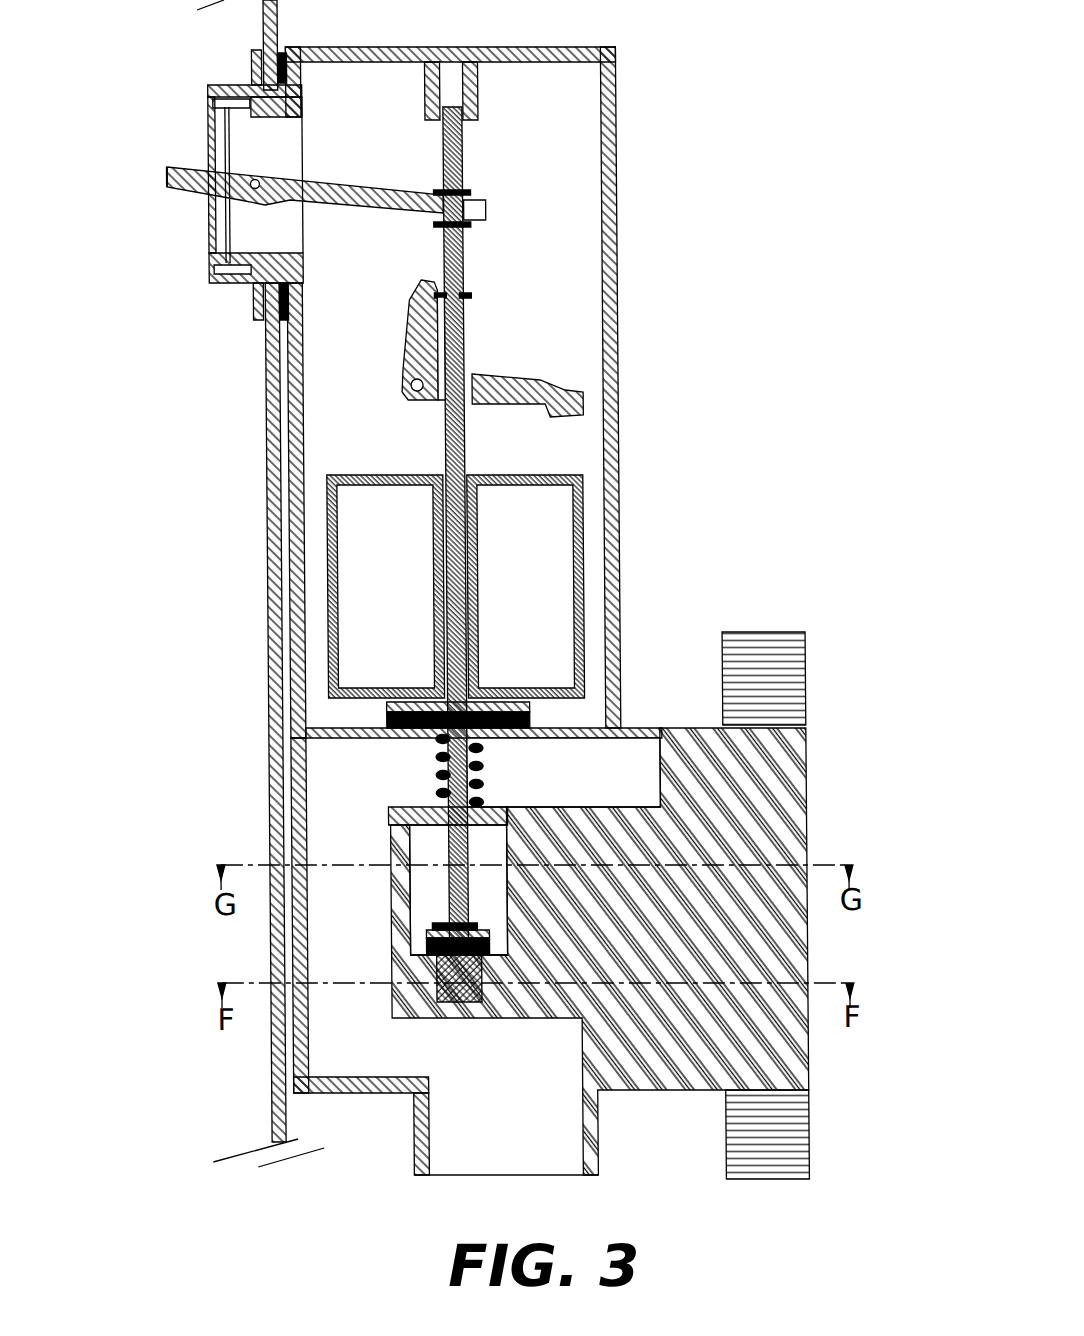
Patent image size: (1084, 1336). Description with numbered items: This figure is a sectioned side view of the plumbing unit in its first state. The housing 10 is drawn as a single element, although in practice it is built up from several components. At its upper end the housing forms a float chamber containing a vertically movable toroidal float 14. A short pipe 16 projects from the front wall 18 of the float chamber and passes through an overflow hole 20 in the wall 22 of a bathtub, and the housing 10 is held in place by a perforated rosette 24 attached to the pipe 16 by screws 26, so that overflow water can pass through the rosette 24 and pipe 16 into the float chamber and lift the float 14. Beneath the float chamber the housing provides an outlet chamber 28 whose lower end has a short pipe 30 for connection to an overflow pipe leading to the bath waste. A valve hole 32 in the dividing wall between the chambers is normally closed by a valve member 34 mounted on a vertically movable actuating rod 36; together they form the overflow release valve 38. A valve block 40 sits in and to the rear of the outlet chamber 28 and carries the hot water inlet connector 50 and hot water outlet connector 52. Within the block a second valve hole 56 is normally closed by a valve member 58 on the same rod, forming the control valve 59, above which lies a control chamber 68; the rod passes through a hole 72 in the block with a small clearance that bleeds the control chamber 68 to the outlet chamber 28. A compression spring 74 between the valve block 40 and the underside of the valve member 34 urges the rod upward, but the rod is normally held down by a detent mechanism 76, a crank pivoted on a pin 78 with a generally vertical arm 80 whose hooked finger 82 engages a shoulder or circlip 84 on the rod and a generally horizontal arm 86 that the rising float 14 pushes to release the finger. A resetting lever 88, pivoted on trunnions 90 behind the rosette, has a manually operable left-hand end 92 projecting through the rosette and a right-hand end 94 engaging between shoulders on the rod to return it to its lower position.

The housing 10 is at (800, 392).
The toroidal float 14 is at (589, 520).
The short pipe 16 is at (268, 270).
The front wall 18 is at (301, 540).
The overflow hole 20 is at (264, 300).
The wall of a bathtub 22 is at (270, 415).
The perforated rosette 24 is at (201, 212).
The screws 26 is at (210, 100).
The outlet chamber 28 is at (336, 890).
The short pipe 30 is at (414, 1140).
The valve hole 32 is at (407, 740).
The valve member 34 is at (530, 715).
The actuating rod 36 is at (455, 435).
The overflow release valve 38 is at (502, 750).
The valve block 40 is at (634, 1072).
The hot water inlet connector 50 is at (807, 1148).
The hot water outlet connector 52 is at (811, 665).
The valve hole 56 is at (450, 970).
The valve member 58 is at (430, 945).
The control valve 59 is at (500, 985).
The control chamber 68 is at (426, 900).
The hole 72 is at (442, 815).
The compression spring 74 is at (432, 758).
The detent mechanism 76 is at (500, 355).
The pin 78 is at (415, 395).
The generally vertical arm 80 is at (410, 340).
The hooked finger 82 is at (456, 283).
The shoulder or circlip 84 is at (476, 298).
The generally horizontal arm 86 is at (565, 395).
The resetting lever 88 is at (297, 180).
The trunnions 90 is at (247, 205).
The left-hand end 92 is at (175, 170).
The right-hand end 94 is at (485, 195).